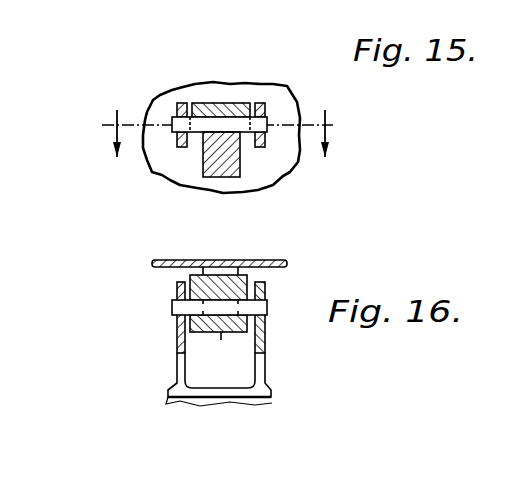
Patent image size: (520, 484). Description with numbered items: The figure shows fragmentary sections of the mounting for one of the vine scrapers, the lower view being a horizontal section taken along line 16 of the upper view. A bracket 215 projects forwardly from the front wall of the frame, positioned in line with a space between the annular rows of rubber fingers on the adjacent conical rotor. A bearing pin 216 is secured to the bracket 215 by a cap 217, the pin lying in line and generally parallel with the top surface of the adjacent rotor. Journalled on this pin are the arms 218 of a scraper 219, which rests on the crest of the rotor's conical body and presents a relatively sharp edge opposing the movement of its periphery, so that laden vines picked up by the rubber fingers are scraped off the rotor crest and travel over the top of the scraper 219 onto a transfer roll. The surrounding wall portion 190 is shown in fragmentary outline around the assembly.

In FIG. 15, the section line 16- 16 is at (219, 121).
In FIG. 15, the wall portion 190 is at (183, 92).
In FIG. 15, the bracket 215 is at (232, 174).
In FIG. 16, the bracket 215 is at (224, 267).
In FIG. 15, the bearing pin 216 is at (174, 129).
In FIG. 16, the bearing pin 216 is at (172, 308).
In FIG. 15, the cap 217 is at (223, 102).
In FIG. 16, the cap 217 is at (258, 358).
In FIG. 15, the arm 218 is at (259, 105).
In FIG. 16, the arm 218 is at (178, 357).
In FIG. 15, the scraper 219 is at (183, 147).
In FIG. 16, the scraper 219 is at (273, 399).